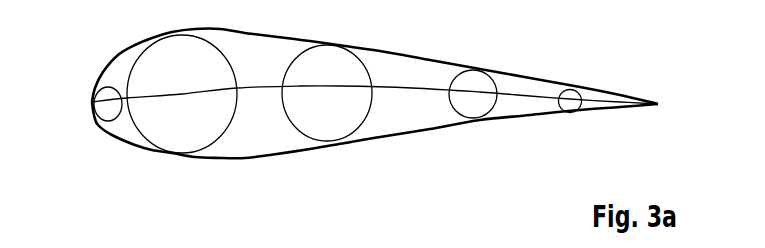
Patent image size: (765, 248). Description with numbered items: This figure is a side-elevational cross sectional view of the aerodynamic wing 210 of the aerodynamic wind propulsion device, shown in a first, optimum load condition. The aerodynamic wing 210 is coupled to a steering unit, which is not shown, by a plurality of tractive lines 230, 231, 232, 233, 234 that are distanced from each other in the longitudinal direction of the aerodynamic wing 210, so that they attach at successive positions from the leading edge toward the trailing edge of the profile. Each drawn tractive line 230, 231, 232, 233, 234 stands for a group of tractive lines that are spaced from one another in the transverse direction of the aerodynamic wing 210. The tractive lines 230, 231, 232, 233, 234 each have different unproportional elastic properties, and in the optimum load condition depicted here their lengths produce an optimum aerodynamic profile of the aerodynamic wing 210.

The aerodynamic wing 210 is at (412, 88).
The tractive line 230 is at (107, 103).
The tractive line 231 is at (181, 94).
The tractive line 232 is at (331, 88).
The tractive line 233 is at (474, 92).
The tractive line 234 is at (570, 98).